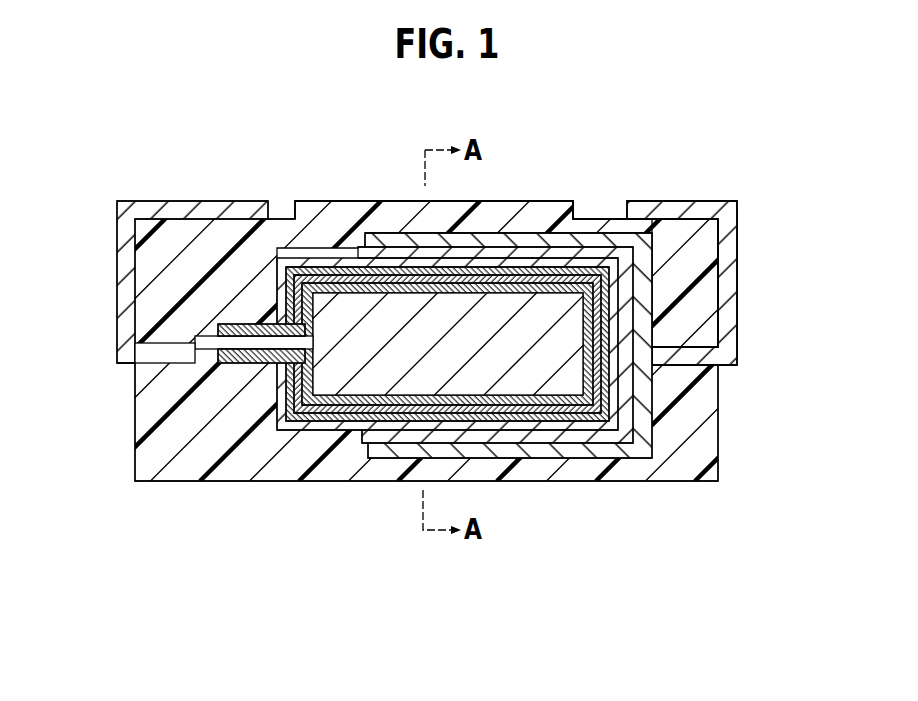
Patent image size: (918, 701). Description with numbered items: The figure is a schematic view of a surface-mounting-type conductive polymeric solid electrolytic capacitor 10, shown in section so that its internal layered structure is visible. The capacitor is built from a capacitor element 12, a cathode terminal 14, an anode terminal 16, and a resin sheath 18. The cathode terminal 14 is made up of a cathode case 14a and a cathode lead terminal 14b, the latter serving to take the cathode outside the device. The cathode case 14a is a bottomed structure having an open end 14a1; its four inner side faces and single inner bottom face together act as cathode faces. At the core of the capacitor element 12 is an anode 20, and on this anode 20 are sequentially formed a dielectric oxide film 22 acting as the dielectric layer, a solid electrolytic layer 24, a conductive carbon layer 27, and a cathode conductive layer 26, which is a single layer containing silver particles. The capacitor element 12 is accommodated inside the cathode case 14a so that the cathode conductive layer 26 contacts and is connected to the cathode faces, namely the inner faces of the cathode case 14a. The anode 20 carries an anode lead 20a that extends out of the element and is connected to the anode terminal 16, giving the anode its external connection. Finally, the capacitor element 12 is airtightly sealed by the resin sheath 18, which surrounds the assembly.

The solid electrolytic capacitor 10 is at (559, 177).
The capacitor element 12 is at (310, 440).
The cathode terminal 14 is at (837, 217).
The cathode case 14a is at (640, 306).
The open end 14a1 is at (348, 258).
The cathode lead terminal 14b is at (735, 237).
The anode terminal 16 is at (198, 210).
The resin sheath 18 is at (231, 470).
The anode 20 is at (541, 377).
The anode lead 20a is at (218, 328).
The dielectric oxide film 22 is at (587, 410).
The solid electrolytic layer 24 is at (627, 395).
The cathode conductive layer 26 is at (637, 386).
The conductive carbon layer 27 is at (615, 410).